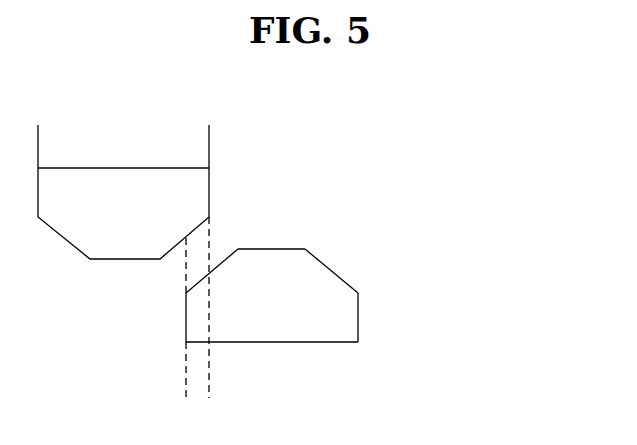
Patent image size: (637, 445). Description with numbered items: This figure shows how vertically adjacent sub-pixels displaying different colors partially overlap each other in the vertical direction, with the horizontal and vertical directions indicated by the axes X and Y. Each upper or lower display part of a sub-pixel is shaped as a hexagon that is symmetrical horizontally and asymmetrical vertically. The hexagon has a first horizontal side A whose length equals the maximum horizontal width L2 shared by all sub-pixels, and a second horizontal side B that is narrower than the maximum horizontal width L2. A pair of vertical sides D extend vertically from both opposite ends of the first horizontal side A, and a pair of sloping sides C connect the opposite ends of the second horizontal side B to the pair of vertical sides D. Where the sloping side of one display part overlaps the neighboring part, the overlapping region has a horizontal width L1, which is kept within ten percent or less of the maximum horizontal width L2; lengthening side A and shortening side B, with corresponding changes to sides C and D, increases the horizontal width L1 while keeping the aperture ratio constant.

The first horizontal side A is at (307, 342).
The second horizontal side B is at (272, 249).
The sloping sides C is at (331, 268).
The vertical sides D is at (358, 318).
The horizontal width of vertically overlapping region L1 is at (248, 386).
The maximum horizontal width L2 is at (38, 140).
The X axis X is at (495, 340).
The Y axis Y is at (495, 340).